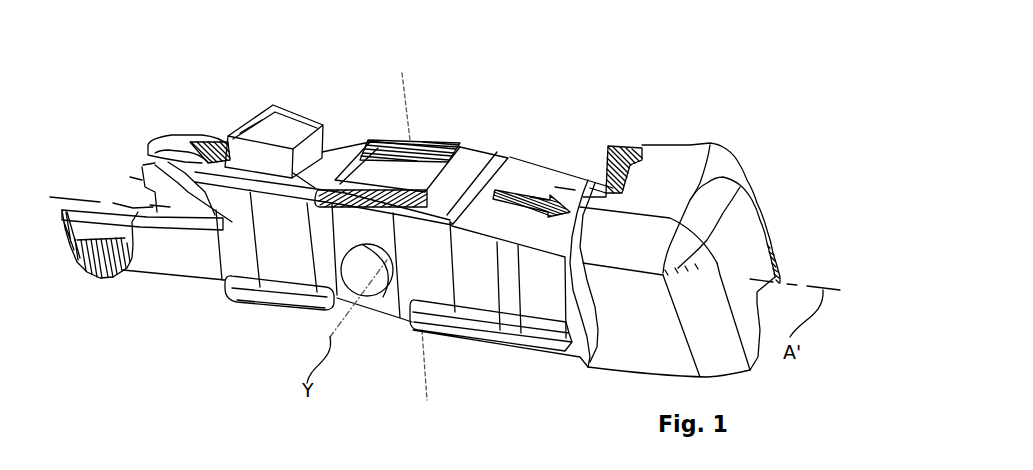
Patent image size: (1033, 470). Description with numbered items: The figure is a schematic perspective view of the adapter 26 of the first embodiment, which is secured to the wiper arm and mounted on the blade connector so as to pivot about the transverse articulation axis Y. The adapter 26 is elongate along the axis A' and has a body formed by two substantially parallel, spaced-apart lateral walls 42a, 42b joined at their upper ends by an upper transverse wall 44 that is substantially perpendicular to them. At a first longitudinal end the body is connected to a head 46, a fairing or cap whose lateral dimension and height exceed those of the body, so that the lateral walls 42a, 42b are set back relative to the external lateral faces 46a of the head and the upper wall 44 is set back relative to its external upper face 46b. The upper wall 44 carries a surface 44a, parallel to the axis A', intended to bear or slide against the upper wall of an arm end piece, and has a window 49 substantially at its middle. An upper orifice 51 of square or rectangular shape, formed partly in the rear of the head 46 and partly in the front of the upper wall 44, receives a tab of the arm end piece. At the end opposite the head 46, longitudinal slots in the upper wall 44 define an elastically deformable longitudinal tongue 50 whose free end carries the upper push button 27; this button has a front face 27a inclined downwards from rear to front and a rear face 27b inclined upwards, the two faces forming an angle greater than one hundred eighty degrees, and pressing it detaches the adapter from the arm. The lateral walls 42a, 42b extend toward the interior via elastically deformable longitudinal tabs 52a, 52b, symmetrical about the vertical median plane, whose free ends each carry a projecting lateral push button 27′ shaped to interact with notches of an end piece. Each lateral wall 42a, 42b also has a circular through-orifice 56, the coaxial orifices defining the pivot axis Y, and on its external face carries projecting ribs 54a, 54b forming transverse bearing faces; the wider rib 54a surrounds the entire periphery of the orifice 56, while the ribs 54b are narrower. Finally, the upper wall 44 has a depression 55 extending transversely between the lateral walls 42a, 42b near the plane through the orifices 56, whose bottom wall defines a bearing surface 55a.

The adapter 26 is at (597, 87).
The push button 27 is at (297, 120).
The front face 27a is at (277, 123).
The rear face 27b is at (227, 153).
The lateral push button 27′ is at (105, 280).
The lateral wall 42a is at (432, 287).
The lateral wall 42b is at (527, 183).
The upper transverse wall 44 is at (467, 157).
The surface 44a is at (487, 150).
The head 46 is at (680, 167).
The lateral face 46a is at (633, 340).
The upper face 46b is at (690, 158).
The window 49 is at (423, 150).
The longitudinal tongue 50 is at (330, 153).
The upper orifice 51 is at (623, 147).
The longitudinal tab 52a is at (153, 267).
The longitudinal tab 52b is at (152, 183).
The projecting rib 54a is at (278, 263).
The projecting rib 54b is at (540, 303).
The depression 55 is at (555, 187).
The bearing surface 55a is at (530, 197).
The through-orifice 56 is at (373, 293).